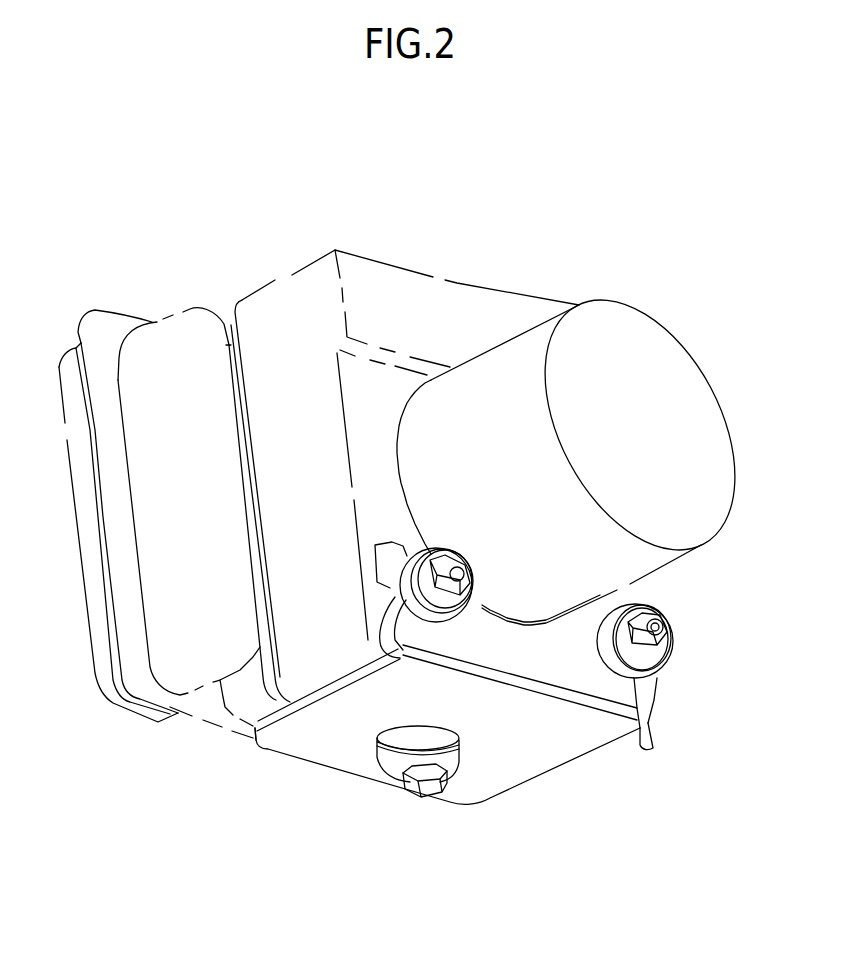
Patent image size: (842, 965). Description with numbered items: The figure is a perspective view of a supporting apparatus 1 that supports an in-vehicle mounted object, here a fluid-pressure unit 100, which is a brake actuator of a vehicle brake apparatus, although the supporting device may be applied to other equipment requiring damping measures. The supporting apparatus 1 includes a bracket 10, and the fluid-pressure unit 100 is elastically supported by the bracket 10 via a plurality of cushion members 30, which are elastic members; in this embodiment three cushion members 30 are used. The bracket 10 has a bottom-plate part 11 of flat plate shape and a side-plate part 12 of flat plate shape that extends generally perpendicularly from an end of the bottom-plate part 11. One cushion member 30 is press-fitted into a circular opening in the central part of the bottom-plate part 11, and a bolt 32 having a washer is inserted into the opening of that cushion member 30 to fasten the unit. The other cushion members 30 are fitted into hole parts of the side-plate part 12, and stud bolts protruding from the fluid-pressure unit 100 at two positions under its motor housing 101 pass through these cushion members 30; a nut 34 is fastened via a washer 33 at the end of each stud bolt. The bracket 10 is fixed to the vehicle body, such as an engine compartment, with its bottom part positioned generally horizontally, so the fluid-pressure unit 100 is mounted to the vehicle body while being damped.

The supporting apparatus 1 is at (258, 755).
The bracket 10 is at (493, 700).
The bottom-plate part 11 is at (537, 767).
The side-plate part 12 is at (652, 686).
The cushion member 30 is at (430, 618).
The bolt 32 is at (448, 778).
The washer 33 is at (455, 610).
The nut 34 is at (450, 560).
The fluid-pressure unit 100 is at (276, 278).
The motor housing 101 is at (683, 340).